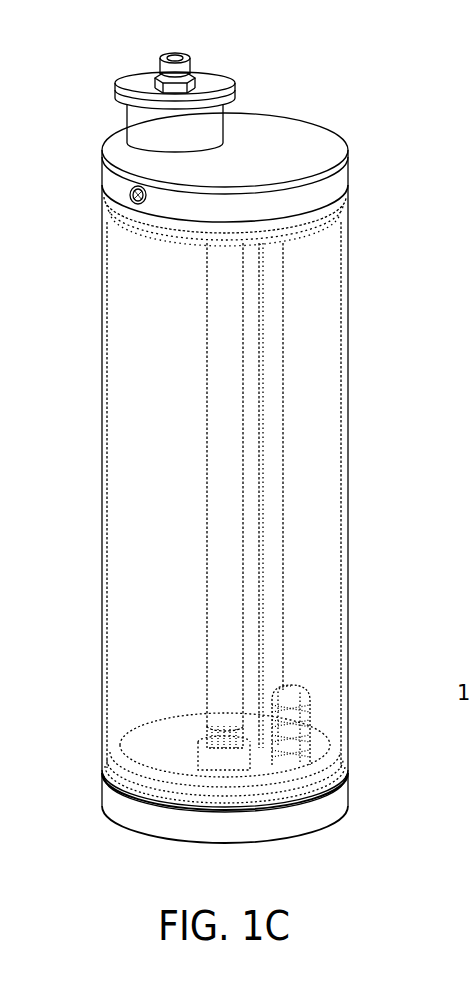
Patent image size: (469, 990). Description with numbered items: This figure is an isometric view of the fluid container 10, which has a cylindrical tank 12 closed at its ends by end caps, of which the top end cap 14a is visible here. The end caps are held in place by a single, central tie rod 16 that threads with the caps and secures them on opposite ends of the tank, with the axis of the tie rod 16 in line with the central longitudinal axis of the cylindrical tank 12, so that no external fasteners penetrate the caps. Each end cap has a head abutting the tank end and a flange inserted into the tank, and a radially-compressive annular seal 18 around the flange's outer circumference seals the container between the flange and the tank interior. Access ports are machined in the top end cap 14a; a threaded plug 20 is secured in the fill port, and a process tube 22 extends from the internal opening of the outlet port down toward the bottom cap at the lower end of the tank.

The fluid container 10 is at (71, 62).
The cylindrical tank 12 is at (343, 520).
The end cap 14a is at (337, 150).
The tie rod 16 is at (222, 433).
The annular seal 18 is at (323, 218).
The threaded plug 20 is at (208, 80).
The process tube 22 is at (293, 440).